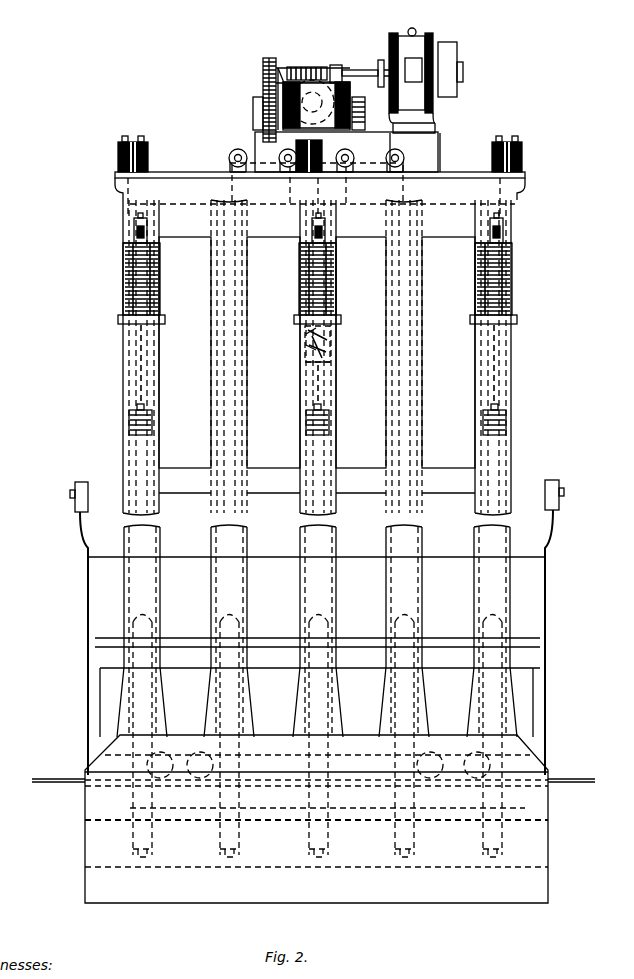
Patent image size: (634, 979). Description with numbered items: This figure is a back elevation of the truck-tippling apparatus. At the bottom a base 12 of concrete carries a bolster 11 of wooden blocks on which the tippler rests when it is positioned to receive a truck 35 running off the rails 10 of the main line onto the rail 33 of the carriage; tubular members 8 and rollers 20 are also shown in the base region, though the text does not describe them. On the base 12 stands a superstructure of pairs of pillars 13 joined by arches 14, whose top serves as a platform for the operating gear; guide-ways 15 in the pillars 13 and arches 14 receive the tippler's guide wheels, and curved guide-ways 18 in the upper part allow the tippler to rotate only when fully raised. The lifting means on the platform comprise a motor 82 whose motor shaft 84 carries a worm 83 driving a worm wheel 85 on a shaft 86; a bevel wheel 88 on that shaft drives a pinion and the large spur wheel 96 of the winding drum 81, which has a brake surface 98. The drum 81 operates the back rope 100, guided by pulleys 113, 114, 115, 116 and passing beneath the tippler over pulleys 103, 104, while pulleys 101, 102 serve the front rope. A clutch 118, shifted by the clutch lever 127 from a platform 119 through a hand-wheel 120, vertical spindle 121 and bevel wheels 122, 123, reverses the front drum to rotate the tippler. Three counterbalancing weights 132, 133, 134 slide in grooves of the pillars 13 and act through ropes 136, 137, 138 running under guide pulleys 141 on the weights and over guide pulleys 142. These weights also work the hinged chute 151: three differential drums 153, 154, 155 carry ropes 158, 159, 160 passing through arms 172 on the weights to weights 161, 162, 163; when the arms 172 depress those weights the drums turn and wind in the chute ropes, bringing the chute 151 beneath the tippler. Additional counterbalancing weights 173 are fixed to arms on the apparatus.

The tube 8 is at (183, 640).
The rails of the main line 10 is at (40, 778).
The bolster 11 is at (98, 820).
The base 12 is at (316, 819).
The pillars 13 is at (160, 388).
The arches 14 is at (184, 180).
The guide-ways 15 is at (470, 382).
The curved guide-ways 18 is at (245, 222).
The roller 20 is at (215, 748).
The rail 33 is at (266, 780).
The truck 35 is at (100, 693).
The winding drum 81 is at (350, 95).
The motor 82 is at (428, 33).
The worm 83 is at (308, 67).
The motor shaft 84 is at (373, 68).
The worm wheel 85 is at (330, 65).
The shaft 86 is at (290, 67).
The bevel wheel 88 is at (355, 57).
The spur wheel 96 is at (262, 82).
The brake surface 98 is at (265, 58).
The back rope 100 is at (250, 150).
The guide pulley 101 is at (238, 720).
The guide pulley 102 is at (388, 722).
The guide pulley 103 is at (238, 790).
The guide pulley 104 is at (388, 790).
The guide pulley 113 is at (238, 149).
The guide pulley 114 is at (283, 167).
The guide pulley 115 is at (350, 160).
The guide pulley 116 is at (404, 156).
The clutch 118 is at (283, 100).
The platform 119 is at (332, 366).
The hand-wheel 120 is at (330, 338).
The vertical spindle 121 is at (312, 224).
The bevel wheel 122 is at (306, 352).
The bevel wheel 123 is at (306, 335).
The clutch lever 127 is at (346, 152).
The counterbalancing weight 132 is at (123, 283).
The counterbalancing weight 133 is at (306, 283).
The counterbalancing weight 134 is at (512, 296).
The counterbalancing rope 136 is at (123, 192).
The counterbalancing rope 137 is at (364, 195).
The counterbalancing rope 138 is at (517, 192).
The guide pulley 141 is at (134, 231).
The guide pulley 142 is at (140, 142).
The hinged chute 151 is at (368, 580).
The differential drum 153 is at (122, 140).
The differential drum 154 is at (305, 190).
The differential drum 155 is at (520, 140).
The rope 158 is at (138, 360).
The rope 159 is at (316, 390).
The rope 160 is at (494, 382).
The weight 161 is at (129, 423).
The weight 162 is at (306, 427).
The weight 163 is at (483, 428).
The arms 172 is at (123, 244).
The counterbalancing weights 173 is at (75, 505).